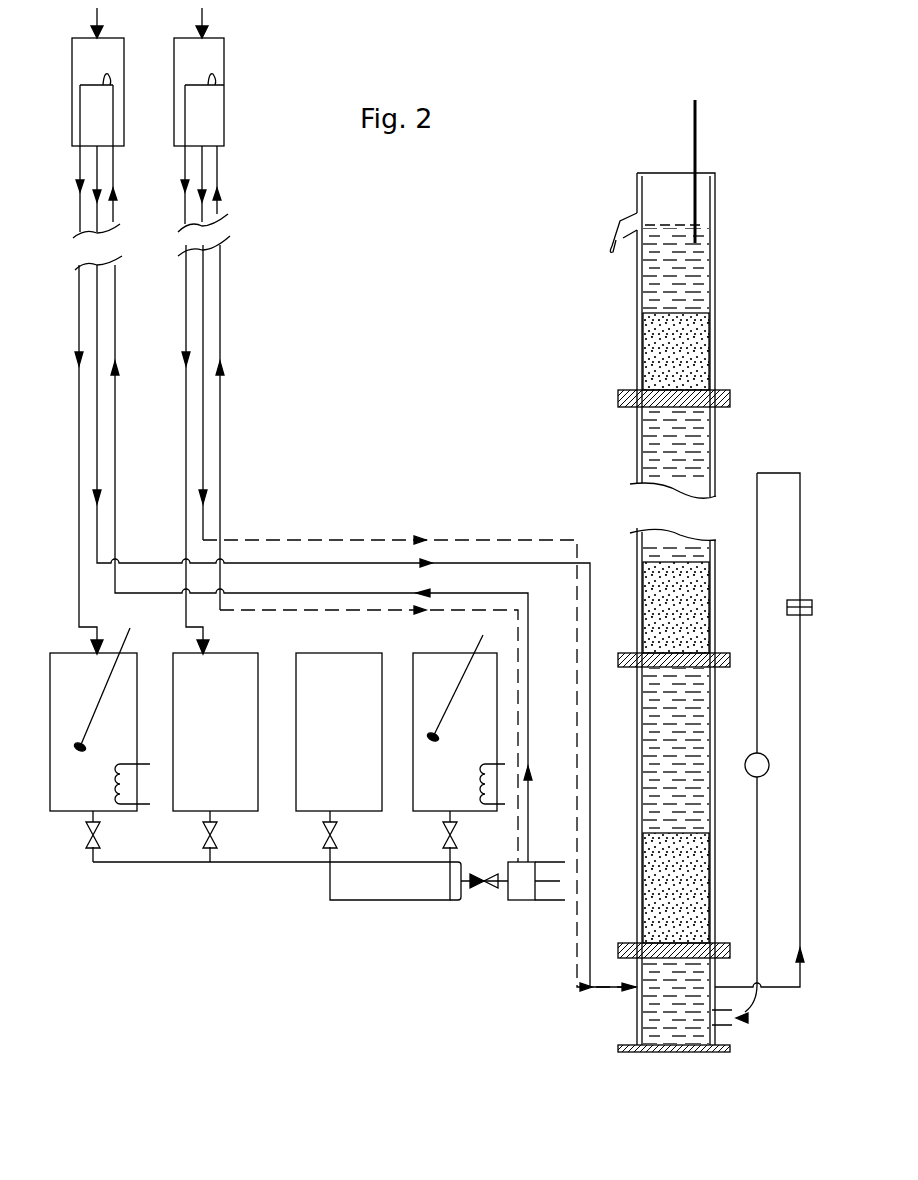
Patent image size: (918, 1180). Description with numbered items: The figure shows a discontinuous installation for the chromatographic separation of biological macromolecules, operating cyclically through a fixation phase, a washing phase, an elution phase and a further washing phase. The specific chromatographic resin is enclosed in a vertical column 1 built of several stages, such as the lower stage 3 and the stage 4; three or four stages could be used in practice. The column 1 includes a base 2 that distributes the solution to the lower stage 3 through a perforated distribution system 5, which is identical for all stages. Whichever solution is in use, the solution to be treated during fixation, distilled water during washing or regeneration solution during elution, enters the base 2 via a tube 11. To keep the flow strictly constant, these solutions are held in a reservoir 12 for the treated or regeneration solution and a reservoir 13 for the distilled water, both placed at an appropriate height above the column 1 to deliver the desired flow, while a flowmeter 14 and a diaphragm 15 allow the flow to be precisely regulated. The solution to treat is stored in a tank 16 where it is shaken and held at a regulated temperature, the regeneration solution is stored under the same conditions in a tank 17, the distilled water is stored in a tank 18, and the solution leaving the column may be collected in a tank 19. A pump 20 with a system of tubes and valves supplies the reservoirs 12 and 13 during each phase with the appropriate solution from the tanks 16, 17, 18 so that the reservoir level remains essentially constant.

The vertical column 1 is at (737, 356).
The base 2 is at (638, 1020).
The lower stage 3 is at (715, 893).
The stage 4 is at (713, 560).
The perforated distribution system 5 is at (697, 655).
The tube 11 is at (752, 1013).
The reservoir 12 is at (72, 50).
The reservoir 13 is at (224, 62).
The flowmeter 14 is at (766, 760).
The diaphragm 15 is at (790, 615).
The tank 16 is at (60, 660).
The tank 17 is at (436, 666).
The tank 18 is at (248, 668).
The tank 19 is at (356, 666).
The pump 20 is at (523, 897).